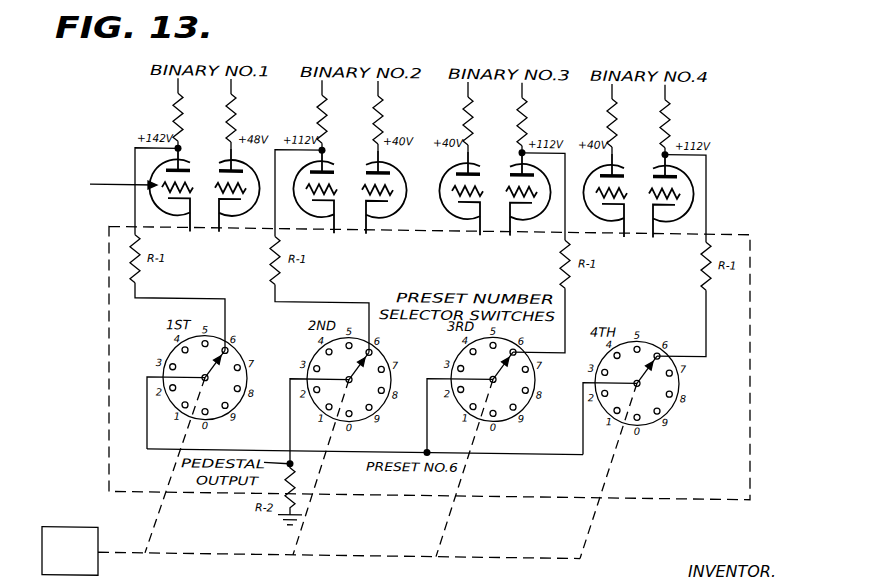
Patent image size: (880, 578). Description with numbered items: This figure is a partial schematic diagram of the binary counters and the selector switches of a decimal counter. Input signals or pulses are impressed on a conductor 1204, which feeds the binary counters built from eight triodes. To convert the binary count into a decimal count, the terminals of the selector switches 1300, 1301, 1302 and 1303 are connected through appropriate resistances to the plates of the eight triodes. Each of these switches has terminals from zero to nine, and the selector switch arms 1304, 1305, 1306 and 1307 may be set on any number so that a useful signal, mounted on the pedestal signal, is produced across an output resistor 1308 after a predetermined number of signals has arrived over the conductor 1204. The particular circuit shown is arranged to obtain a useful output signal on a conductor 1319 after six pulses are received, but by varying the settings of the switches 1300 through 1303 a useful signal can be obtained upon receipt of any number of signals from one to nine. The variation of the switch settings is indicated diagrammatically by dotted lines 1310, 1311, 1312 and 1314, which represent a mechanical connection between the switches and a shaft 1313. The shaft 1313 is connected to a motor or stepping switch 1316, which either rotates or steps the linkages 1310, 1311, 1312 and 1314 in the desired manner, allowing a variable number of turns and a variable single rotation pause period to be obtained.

The conductor 1204 is at (117, 182).
The selector switch 1300 is at (244, 337).
The selector switch 1301 is at (389, 349).
The selector switch 1302 is at (552, 376).
The selector switch 1303 is at (676, 310).
The selector switch arm 1304 is at (204, 376).
The selector switch arm 1305 is at (349, 374).
The selector switch arm 1306 is at (493, 372).
The selector switch arm 1307 is at (637, 375).
The output resistor 1308 is at (297, 483).
The dotted line 1310 is at (157, 516).
The dotted line 1311 is at (303, 511).
The dotted line 1312 is at (448, 515).
The shaft 1313 is at (363, 555).
The dotted line 1314 is at (592, 514).
The motor or stepping switch 1316 is at (70, 551).
The conductor 1319 is at (277, 449).